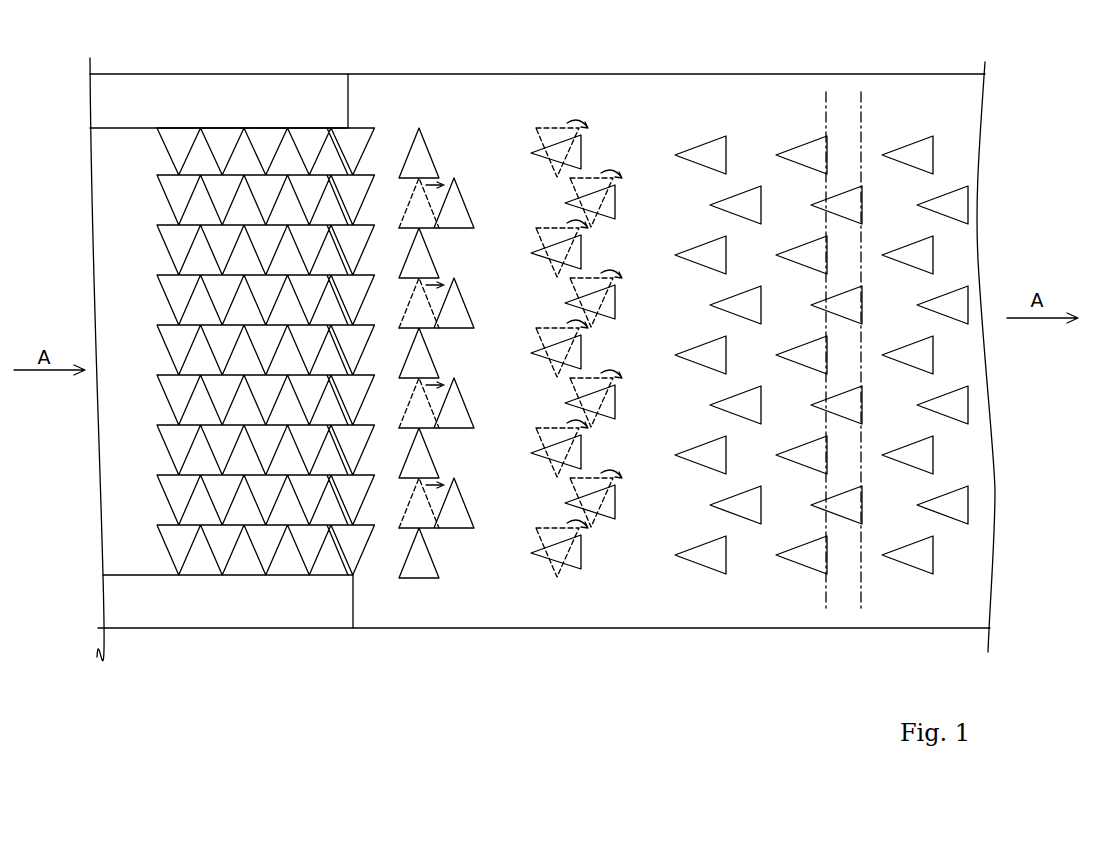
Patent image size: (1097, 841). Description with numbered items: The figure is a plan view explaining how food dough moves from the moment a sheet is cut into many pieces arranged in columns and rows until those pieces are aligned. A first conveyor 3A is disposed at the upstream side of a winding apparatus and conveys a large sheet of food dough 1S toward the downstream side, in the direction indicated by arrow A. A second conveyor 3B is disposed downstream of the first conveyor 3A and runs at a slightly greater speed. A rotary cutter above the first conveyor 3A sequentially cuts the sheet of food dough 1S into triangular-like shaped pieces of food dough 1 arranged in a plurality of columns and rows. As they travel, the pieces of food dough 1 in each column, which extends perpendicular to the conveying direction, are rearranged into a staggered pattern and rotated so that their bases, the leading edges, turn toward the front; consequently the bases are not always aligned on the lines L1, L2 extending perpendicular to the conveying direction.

The piece of food dough 1 is at (356, 130).
The sheet of food dough 1S is at (148, 568).
The first conveyor 3A is at (235, 82).
The second conveyor 3B is at (482, 97).
The line L1 is at (824, 104).
The line L2 is at (861, 104).